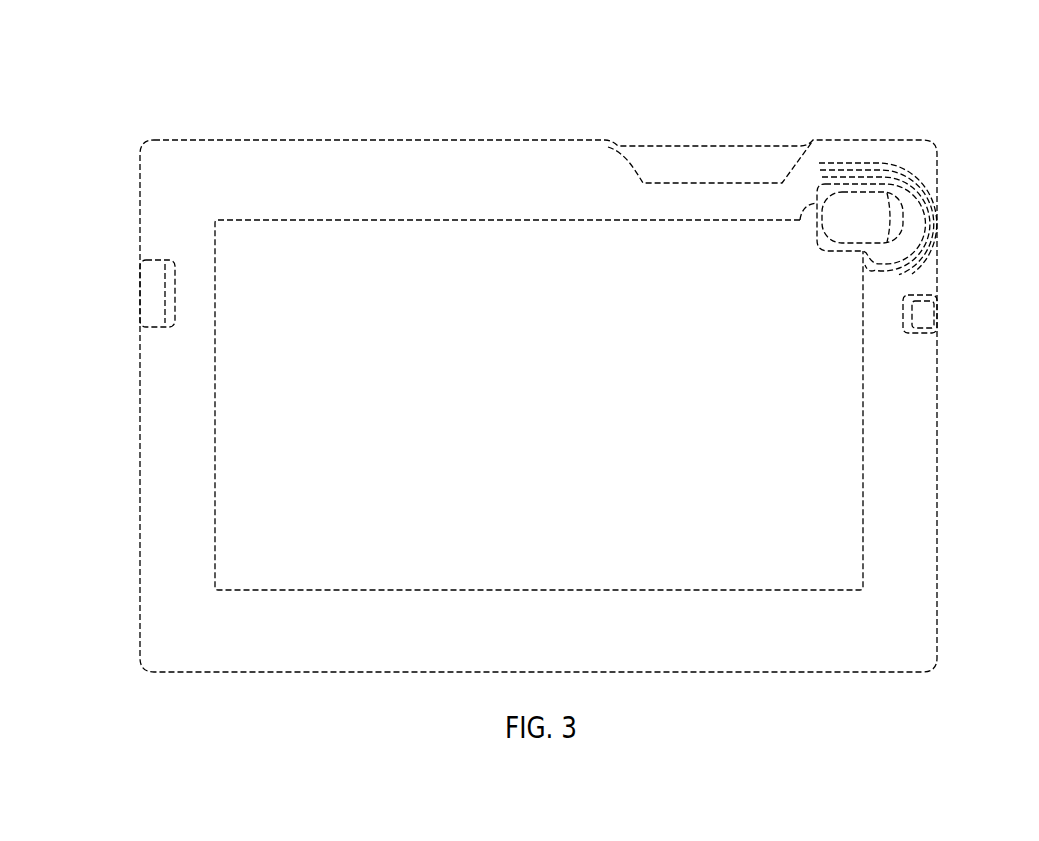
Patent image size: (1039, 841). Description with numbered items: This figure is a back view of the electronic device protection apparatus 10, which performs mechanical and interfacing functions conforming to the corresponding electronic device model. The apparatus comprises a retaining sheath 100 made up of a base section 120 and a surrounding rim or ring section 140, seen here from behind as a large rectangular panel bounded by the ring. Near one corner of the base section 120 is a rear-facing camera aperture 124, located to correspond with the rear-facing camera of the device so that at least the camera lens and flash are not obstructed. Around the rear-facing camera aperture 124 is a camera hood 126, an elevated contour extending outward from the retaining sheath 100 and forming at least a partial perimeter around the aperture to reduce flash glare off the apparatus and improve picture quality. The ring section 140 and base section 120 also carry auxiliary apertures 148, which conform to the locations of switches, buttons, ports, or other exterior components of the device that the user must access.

The electronic device protection apparatus 10 is at (526, 405).
The retaining sheath 100 is at (538, 465).
The base section 120 is at (343, 558).
The rear-facing camera aperture 124 is at (870, 208).
The camera hood 126 is at (937, 212).
The ring section 140 is at (260, 628).
The auxiliary aperture 148 is at (672, 168).